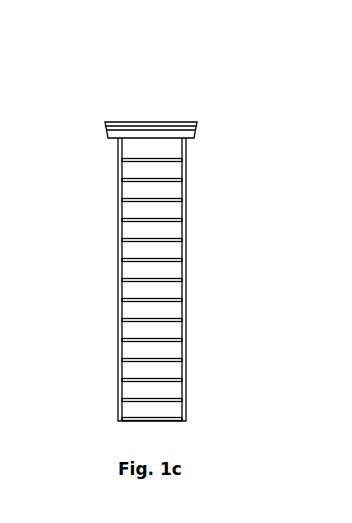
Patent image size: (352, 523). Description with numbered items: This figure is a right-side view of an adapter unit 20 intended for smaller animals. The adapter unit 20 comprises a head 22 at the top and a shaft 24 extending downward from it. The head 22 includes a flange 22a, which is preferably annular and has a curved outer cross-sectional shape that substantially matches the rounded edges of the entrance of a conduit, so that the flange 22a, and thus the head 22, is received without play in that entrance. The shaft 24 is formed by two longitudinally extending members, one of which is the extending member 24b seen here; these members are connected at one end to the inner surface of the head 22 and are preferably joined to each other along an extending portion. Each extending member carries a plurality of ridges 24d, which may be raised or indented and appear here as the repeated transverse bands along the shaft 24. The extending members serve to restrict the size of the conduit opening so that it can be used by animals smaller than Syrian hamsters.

The adapter unit 20 is at (179, 225).
The head 22 is at (127, 116).
The flange 22a is at (248, 106).
The shaft 24 is at (195, 279).
The longitudinally extending member 24b is at (197, 255).
The ridges 24d is at (197, 384).